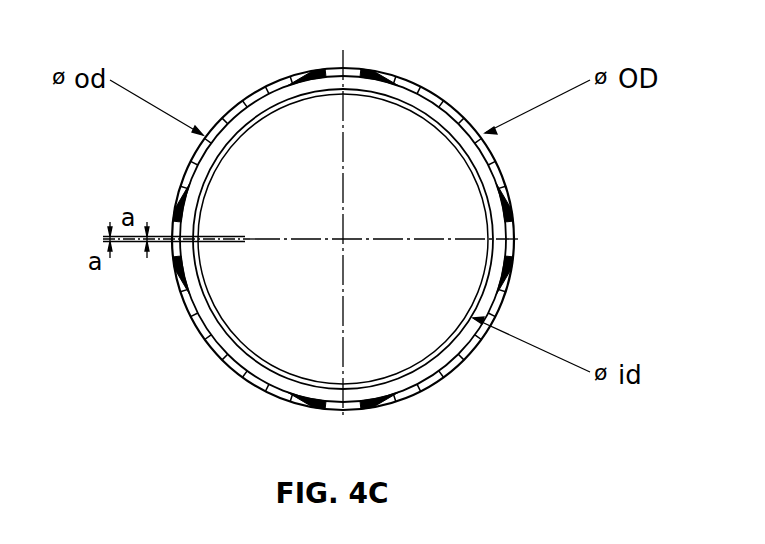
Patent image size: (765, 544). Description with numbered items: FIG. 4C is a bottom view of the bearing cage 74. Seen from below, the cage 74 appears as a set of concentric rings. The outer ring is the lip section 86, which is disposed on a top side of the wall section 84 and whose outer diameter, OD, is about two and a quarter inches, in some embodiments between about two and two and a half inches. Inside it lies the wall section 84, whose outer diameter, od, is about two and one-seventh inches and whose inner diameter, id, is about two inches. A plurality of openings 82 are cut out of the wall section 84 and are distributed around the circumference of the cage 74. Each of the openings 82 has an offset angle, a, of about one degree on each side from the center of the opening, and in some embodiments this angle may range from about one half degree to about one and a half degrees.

The cage 74 is at (196, 417).
The openings 82 is at (397, 72).
The wall section 84 is at (452, 150).
The lip section 86 is at (508, 178).